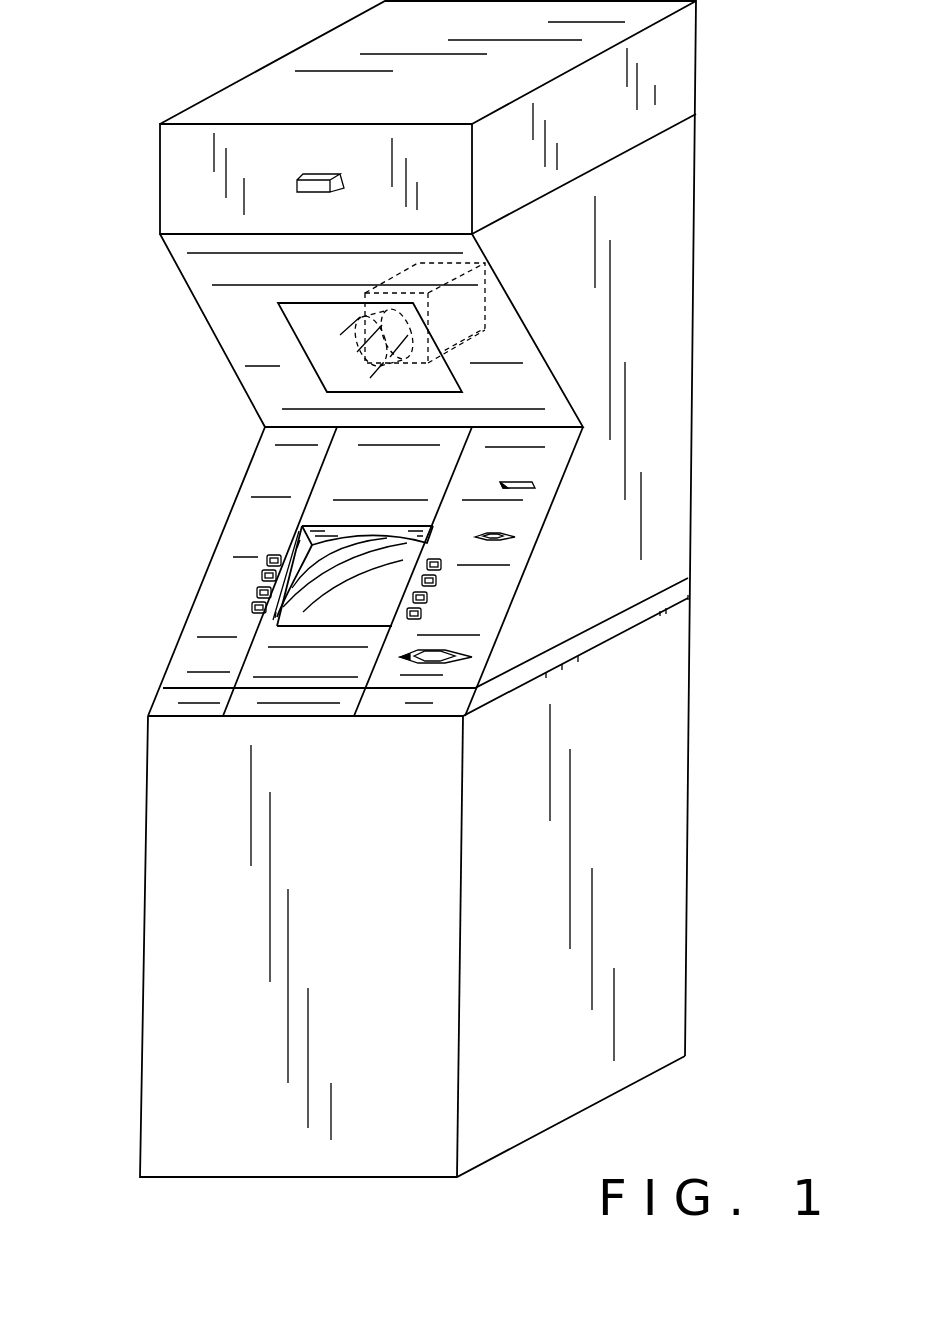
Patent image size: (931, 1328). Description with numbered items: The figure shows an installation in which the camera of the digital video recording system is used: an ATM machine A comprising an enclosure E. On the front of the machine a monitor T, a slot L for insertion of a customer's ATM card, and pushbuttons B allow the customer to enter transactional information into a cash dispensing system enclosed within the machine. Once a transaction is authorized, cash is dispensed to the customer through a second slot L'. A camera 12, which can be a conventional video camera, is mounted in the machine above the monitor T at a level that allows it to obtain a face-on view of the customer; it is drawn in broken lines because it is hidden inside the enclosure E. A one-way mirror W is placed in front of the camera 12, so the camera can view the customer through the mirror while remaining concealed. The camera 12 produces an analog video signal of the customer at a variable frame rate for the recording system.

The ATM machine A is at (128, 845).
The enclosure E is at (693, 481).
The one-way mirror W is at (330, 338).
The camera 12 is at (487, 307).
The monitor T is at (385, 608).
The pushbuttons B is at (262, 576).
The slot L is at (530, 511).
The second slot L' is at (478, 625).